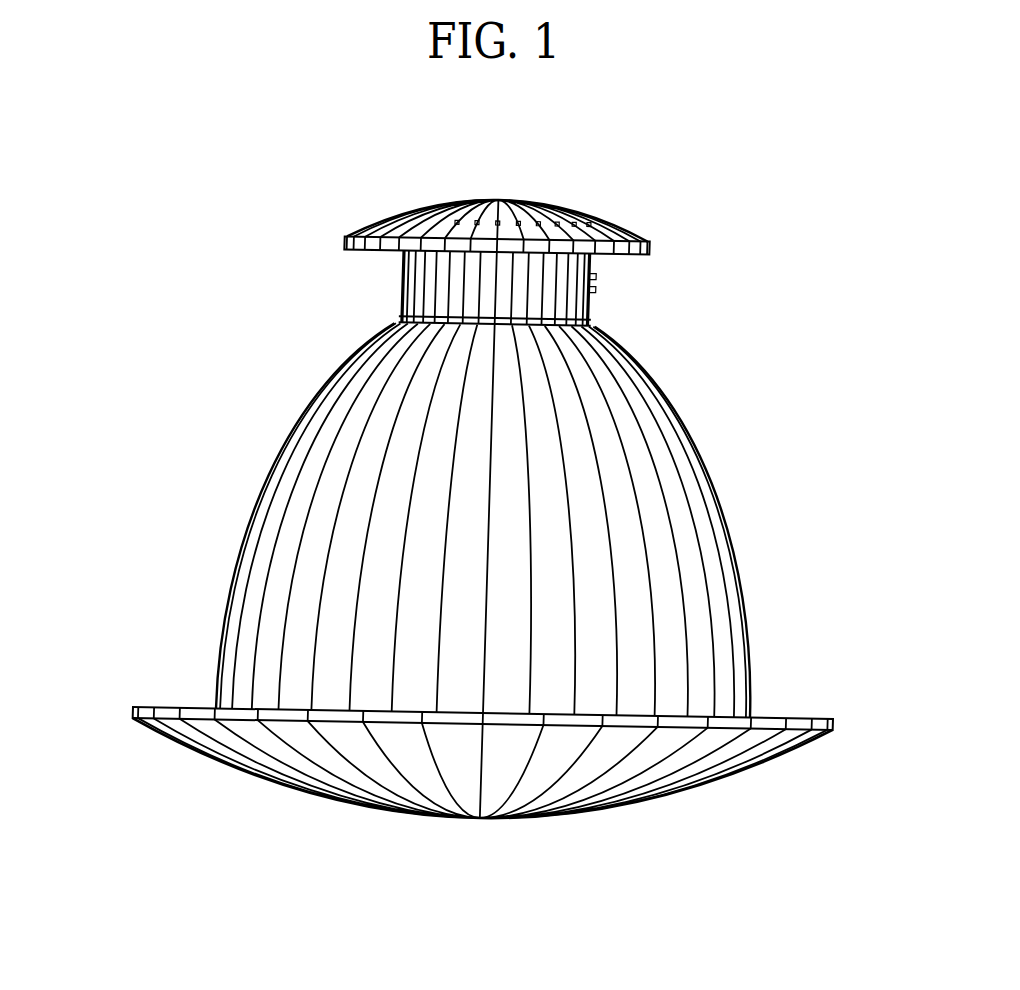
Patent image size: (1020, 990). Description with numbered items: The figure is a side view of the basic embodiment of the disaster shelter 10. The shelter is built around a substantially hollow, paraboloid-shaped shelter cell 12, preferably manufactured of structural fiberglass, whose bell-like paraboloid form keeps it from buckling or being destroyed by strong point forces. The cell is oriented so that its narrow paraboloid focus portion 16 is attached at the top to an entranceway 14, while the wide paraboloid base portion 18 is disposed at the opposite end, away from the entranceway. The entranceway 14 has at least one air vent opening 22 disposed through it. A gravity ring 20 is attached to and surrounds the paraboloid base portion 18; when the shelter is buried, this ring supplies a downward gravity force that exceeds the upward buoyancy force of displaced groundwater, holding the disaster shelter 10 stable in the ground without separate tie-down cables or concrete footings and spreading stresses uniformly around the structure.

The disaster shelter 10 is at (770, 347).
The shelter cell 12 is at (170, 477).
The entranceway 14 is at (362, 275).
The paraboloid focus portion 16 is at (377, 408).
The paraboloid base portion 18 is at (227, 658).
The gravity ring 20 is at (835, 720).
The air vent opening 22 is at (600, 217).